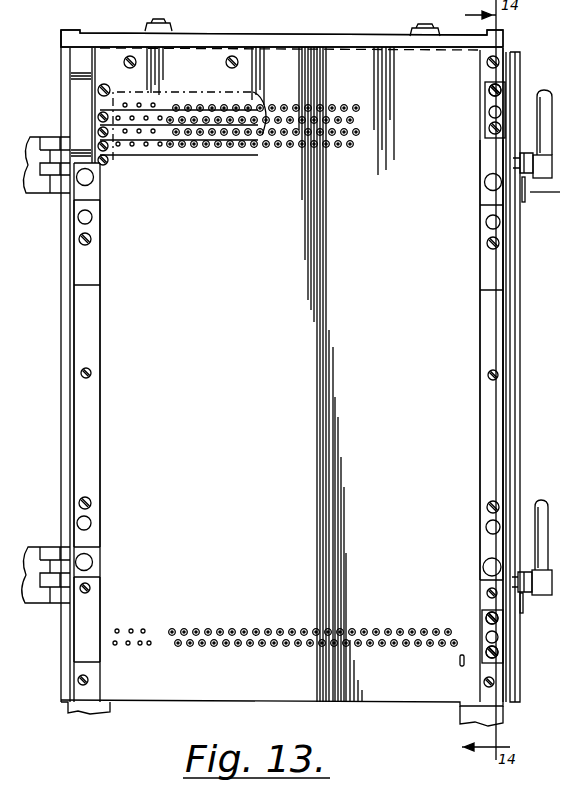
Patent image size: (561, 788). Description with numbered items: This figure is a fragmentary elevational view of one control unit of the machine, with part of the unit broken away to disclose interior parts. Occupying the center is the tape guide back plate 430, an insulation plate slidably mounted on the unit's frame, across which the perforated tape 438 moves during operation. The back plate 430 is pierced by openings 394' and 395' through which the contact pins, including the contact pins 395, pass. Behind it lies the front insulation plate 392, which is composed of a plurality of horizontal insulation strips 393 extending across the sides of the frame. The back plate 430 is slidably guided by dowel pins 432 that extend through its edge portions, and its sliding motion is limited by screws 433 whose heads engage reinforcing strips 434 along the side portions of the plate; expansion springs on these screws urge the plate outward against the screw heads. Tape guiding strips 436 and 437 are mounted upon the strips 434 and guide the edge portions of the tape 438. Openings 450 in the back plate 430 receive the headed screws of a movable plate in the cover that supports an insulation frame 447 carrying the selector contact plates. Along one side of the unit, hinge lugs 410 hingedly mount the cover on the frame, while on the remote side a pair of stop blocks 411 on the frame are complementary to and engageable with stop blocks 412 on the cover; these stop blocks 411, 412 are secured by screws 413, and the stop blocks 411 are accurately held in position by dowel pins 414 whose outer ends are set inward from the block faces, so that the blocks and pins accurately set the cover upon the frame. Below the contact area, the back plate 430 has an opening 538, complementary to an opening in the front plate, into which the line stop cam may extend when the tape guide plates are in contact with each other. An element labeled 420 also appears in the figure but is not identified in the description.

The tape guide back plate 430 is at (300, 46).
The front insulation plate 392 is at (160, 108).
The horizontal insulation strips 393 is at (140, 145).
The contact pins 395 is at (263, 144).
The openings 394' is at (163, 619).
The openings 395' is at (313, 622).
The hinge lugs 410 is at (46, 138).
The openings 450 is at (96, 180).
The dowel pins 432 is at (78, 217).
The screws 433 is at (78, 240).
The reinforcing strips 434 is at (90, 268).
The tape guiding strip 437 is at (96, 410).
The tape guiding strip 436 is at (93, 647).
The dowel pins 414 is at (490, 110).
The screws 413 is at (500, 620).
The stop blocks 411 is at (503, 650).
The stop blocks 412 is at (523, 152).
The side rail 420 is at (508, 355).
The opening 538 is at (458, 663).
The insulation frame 447 is at (190, 783).
The perforated tape 438 is at (325, 783).